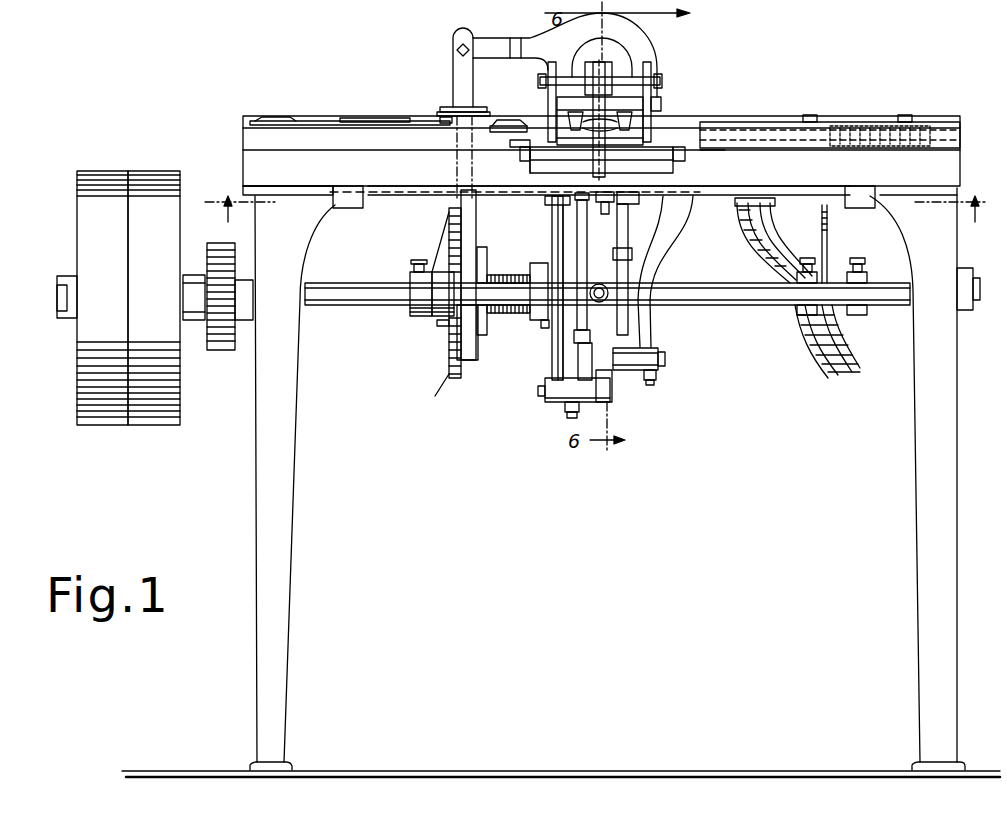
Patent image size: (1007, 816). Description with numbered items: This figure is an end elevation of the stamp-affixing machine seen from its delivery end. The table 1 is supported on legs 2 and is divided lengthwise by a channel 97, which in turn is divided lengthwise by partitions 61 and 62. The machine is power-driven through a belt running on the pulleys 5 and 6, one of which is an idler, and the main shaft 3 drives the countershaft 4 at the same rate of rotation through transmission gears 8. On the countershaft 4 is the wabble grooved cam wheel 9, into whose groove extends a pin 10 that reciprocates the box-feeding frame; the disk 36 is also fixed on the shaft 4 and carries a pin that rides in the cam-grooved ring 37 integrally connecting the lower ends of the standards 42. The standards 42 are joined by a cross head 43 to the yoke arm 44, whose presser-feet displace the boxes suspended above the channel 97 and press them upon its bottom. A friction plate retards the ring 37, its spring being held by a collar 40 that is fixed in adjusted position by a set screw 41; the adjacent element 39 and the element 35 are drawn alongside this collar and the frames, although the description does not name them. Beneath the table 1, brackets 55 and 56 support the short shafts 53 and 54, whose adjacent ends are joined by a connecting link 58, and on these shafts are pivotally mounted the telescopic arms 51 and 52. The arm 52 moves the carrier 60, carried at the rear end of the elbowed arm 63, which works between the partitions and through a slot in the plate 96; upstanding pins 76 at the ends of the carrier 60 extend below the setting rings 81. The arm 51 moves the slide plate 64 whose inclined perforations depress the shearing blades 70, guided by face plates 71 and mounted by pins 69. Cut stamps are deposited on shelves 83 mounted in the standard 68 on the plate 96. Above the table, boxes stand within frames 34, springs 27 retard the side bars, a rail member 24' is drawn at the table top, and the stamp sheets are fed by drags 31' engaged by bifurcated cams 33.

The table 1 is at (950, 166).
The legs 2 is at (945, 233).
The main shaft 3 is at (735, 292).
The countershaft 4 is at (597, 201).
The pulley 5 is at (158, 410).
The pulley 6 is at (103, 412).
The transmission gears 8 is at (222, 336).
The wabble grooved cam wheel 9 is at (835, 375).
The pin 10 is at (770, 211).
The table plate 24' is at (830, 113).
The spiral compression springs 27 is at (848, 132).
The drags 31' is at (388, 113).
The bifurcated cam 33 is at (300, 119).
The frames 34 is at (410, 270).
The set screw 35 is at (421, 258).
The disk 36 is at (443, 310).
The cam-grooved ring 37 is at (478, 352).
The pinion 39 is at (500, 272).
The collar 40 is at (515, 318).
The set screw 41 is at (545, 325).
The standards 42 is at (453, 75).
The cross head 43 is at (490, 42).
The yoke arm 44 is at (625, 35).
The telescopic arm 51 is at (552, 238).
The telescopic arm 52 is at (628, 236).
The short shaft 53 is at (538, 390).
The short shaft 54 is at (665, 360).
The bracket 55 is at (552, 366).
The bracket 56 is at (652, 327).
The connecting link 58 is at (612, 394).
The carrier 60 is at (580, 147).
The partition 61 is at (577, 198).
The partition 62 is at (630, 204).
The elbowed arm 63 is at (604, 214).
The slide plate 64 is at (660, 182).
The standard 68 is at (598, 109).
The pins 69 is at (538, 80).
The shearing blades 70 is at (555, 62).
The face plates 71 is at (512, 147).
The upstanding pins 76 is at (655, 155).
The setting rings 81 is at (568, 120).
The shelves 83 is at (612, 132).
The plate 96 is at (705, 150).
The channel 97 is at (525, 163).